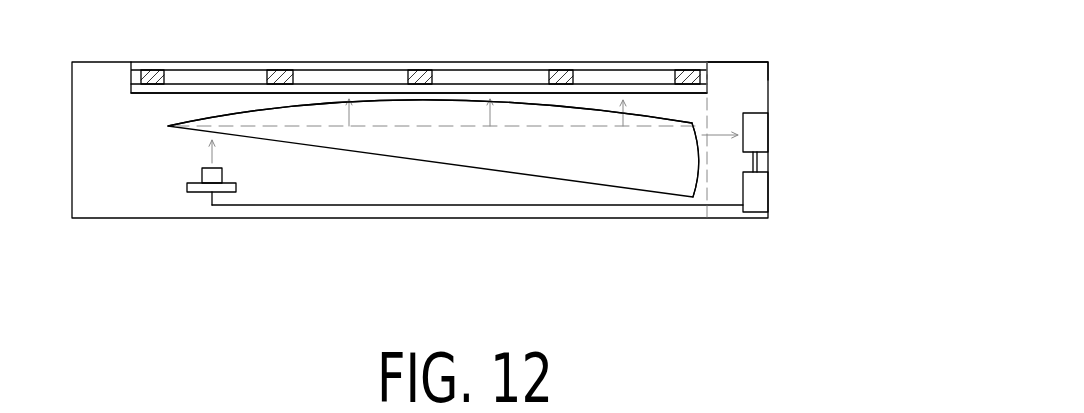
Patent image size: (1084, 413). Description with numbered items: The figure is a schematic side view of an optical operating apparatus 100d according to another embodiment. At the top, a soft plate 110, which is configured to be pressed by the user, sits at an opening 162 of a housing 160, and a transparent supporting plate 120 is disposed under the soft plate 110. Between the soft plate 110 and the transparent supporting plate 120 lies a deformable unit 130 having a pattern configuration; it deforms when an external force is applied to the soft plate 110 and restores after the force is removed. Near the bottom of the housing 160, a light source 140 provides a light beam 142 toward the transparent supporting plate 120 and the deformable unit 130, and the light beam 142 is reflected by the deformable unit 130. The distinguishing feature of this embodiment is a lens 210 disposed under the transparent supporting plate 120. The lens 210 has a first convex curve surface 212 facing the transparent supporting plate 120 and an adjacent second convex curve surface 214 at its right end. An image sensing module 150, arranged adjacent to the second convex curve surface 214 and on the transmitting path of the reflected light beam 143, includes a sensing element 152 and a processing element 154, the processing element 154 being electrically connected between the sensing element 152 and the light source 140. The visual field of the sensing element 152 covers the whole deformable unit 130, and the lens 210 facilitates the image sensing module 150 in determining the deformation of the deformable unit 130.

The optical operating apparatus 100d is at (753, 311).
The soft plate 110 is at (340, 62).
The transparent supporting plate 120 is at (702, 91).
The deformable unit 130 is at (693, 70).
The light source 140 is at (218, 177).
The light beam 142 is at (207, 149).
The reflected light beam 143 is at (718, 135).
The image sensing module 150 is at (817, 162).
The sensing element 152 is at (765, 132).
The processing element 154 is at (765, 190).
The housing 160 is at (497, 218).
The opening 162 is at (703, 60).
The lens 210 is at (645, 182).
The first convex curve surface 212 is at (240, 114).
The second convex curve surface 214 is at (697, 185).